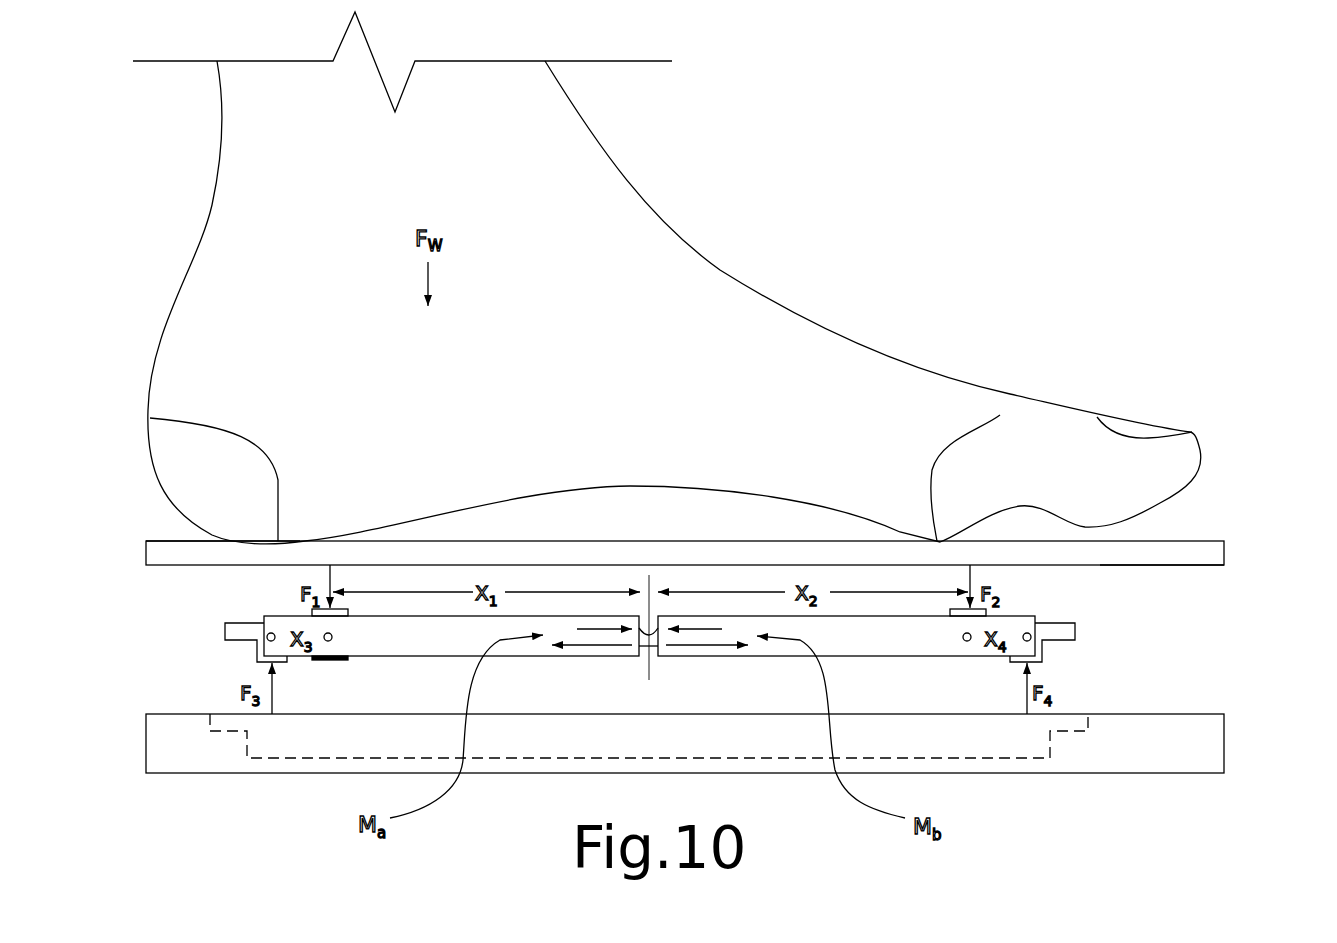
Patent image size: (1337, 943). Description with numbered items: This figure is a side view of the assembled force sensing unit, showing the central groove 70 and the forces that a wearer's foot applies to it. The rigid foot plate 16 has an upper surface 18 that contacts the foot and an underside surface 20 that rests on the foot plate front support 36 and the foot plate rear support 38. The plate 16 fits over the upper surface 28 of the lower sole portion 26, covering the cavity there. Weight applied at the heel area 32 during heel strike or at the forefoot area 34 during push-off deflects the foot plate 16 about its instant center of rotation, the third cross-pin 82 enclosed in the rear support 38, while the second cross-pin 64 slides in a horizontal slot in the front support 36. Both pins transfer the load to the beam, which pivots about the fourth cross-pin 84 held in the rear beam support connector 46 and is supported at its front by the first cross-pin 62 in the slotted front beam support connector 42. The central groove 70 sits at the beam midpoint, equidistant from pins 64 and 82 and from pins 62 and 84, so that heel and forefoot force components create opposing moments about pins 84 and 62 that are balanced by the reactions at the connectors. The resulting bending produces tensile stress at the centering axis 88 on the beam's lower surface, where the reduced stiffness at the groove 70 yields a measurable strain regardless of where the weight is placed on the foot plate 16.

The foot plate 16 is at (1200, 553).
The upper surface 18 is at (172, 541).
The underside surface 20 is at (1148, 565).
The lower sole portion 26 is at (1203, 743).
The upper surface 28 is at (188, 714).
The heel area 32 is at (150, 418).
The forefoot area 34 is at (1000, 415).
The foot plate front support 36 is at (986, 611).
The foot plate rear support 38 is at (312, 611).
The front beam support connector 42 is at (1075, 630).
The rear beam support connector 46 is at (225, 630).
The first cross-pin 62 is at (1033, 642).
The second cross-pin 64 is at (965, 642).
The central groove 70 is at (656, 616).
The third cross-pin 82 is at (333, 637).
The fourth cross-pin 84 is at (267, 634).
The centering axis 88 is at (648, 652).